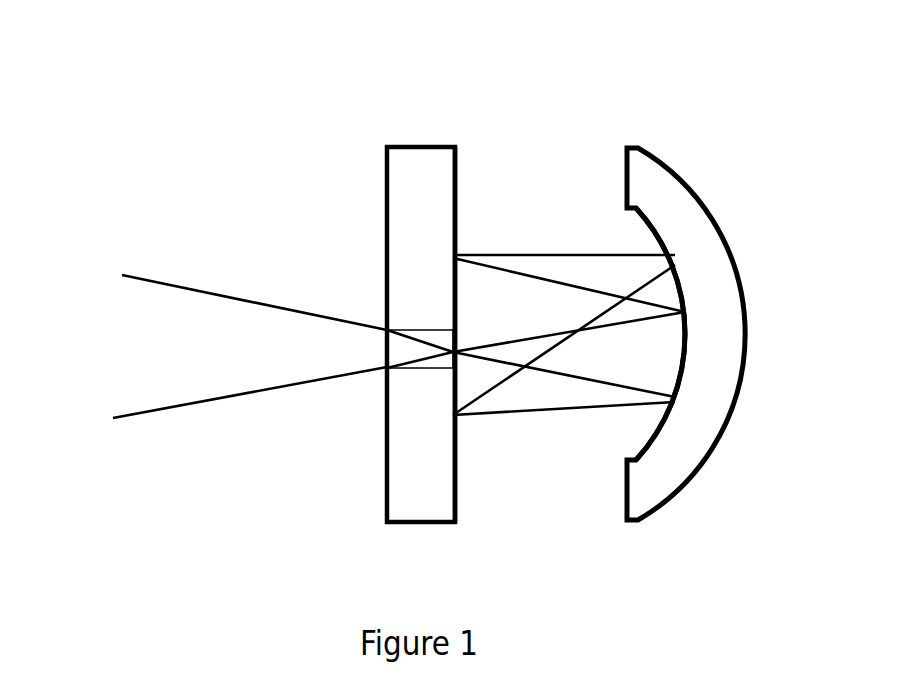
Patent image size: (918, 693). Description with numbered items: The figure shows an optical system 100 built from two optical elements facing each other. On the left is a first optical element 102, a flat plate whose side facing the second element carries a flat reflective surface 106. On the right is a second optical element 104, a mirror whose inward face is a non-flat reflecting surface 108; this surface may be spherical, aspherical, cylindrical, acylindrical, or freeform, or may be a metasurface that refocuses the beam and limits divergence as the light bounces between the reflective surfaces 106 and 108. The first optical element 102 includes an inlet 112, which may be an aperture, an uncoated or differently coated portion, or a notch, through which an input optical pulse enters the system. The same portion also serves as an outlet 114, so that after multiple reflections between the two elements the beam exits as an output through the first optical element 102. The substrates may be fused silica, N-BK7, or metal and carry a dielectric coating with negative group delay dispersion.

The optical system 100 is at (162, 36).
The first optical element 102 is at (385, 180).
The second optical element 104 is at (678, 165).
The flat reflective surface 106 is at (455, 165).
The non-flat reflecting surface 108 is at (653, 447).
The inlet 112 is at (368, 345).
The outlet 114 is at (358, 384).